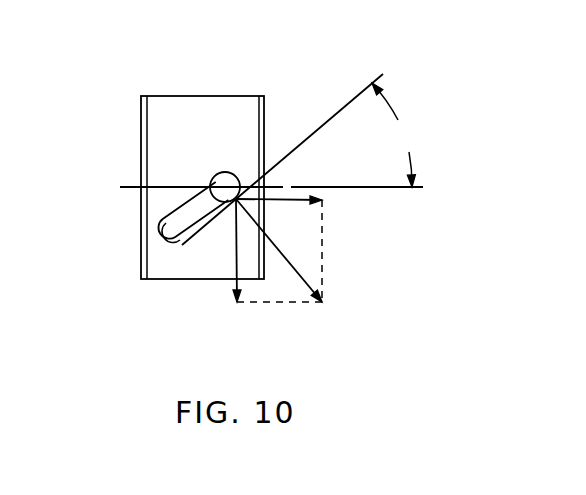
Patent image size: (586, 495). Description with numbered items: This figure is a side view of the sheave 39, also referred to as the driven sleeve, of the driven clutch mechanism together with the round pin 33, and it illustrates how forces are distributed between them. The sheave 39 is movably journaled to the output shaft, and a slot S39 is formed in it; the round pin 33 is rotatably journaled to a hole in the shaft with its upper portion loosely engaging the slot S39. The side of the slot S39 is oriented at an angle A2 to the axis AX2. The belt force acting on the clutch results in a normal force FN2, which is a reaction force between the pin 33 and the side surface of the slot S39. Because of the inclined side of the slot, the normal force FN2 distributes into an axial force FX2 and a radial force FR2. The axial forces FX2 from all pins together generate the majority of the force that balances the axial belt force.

The sheave 39 is at (191, 96).
The round pin 33 is at (227, 172).
The axis AX2 is at (127, 187).
The slot S39 is at (182, 237).
The angle A2 is at (394, 135).
The axial force FX2 is at (310, 207).
The normal force FN2 is at (298, 268).
The radial force FR2 is at (232, 291).